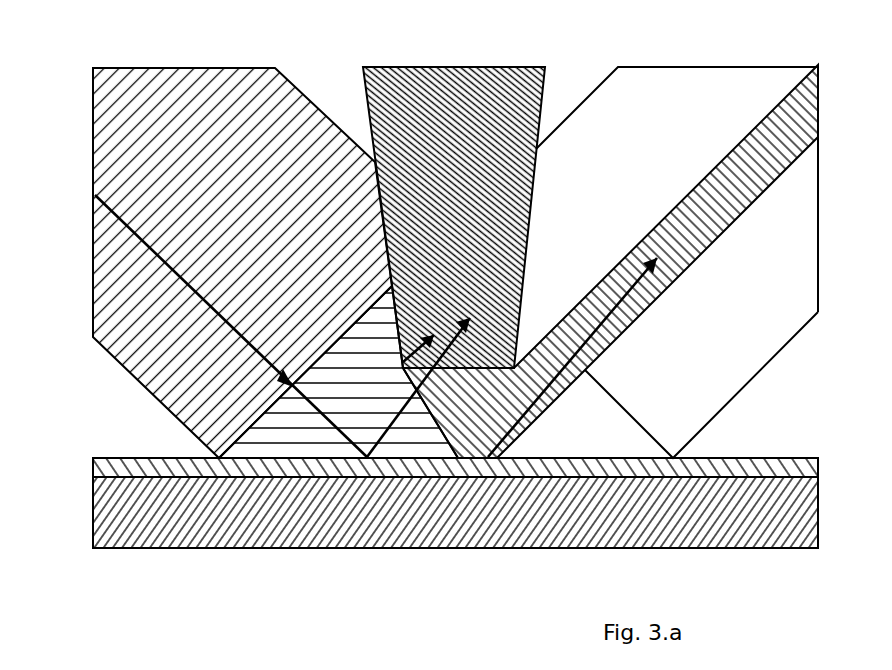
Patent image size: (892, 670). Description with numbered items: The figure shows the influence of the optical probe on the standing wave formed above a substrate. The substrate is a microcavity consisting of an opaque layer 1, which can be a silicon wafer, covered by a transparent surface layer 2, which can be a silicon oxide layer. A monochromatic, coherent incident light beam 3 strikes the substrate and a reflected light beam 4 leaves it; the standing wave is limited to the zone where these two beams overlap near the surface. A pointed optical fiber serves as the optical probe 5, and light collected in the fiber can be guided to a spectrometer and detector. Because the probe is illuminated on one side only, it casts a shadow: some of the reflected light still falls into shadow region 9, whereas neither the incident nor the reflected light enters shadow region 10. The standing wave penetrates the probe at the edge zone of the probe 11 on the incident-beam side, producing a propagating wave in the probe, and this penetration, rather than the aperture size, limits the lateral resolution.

The opaque layer 1 is at (787, 530).
The transparent surface layer 2 is at (787, 470).
The incident light beam 3 is at (133, 160).
The reflected light beam 4 is at (777, 230).
The optical probe 5 is at (473, 103).
The shadow region 9 is at (547, 387).
The shadow region 10 is at (600, 421).
The edge zone of the probe 11 is at (403, 362).